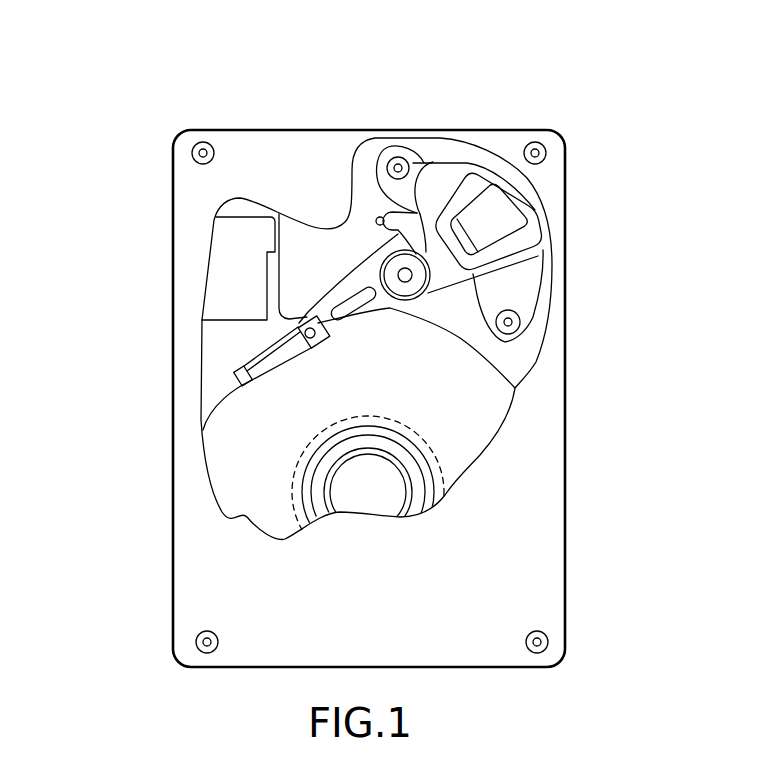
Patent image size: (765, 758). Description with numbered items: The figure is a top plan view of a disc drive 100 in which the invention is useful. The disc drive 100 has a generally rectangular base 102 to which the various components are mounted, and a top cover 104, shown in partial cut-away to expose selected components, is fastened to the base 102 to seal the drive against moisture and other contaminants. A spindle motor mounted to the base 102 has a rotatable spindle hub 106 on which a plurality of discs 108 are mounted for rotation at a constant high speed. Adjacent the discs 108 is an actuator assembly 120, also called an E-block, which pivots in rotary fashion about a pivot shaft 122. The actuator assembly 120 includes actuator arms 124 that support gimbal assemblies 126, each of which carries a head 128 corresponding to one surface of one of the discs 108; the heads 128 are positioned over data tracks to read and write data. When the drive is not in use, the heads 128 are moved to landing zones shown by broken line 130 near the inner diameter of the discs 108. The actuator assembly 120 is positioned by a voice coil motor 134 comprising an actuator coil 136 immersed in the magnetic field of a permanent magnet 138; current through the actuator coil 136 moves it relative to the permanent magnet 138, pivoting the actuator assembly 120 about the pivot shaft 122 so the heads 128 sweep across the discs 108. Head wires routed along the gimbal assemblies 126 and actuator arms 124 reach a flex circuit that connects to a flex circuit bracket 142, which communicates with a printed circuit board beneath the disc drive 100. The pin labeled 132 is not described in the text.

The disc drive 100 is at (200, 100).
The base 102 is at (215, 356).
The top cover 104 is at (207, 562).
The spindle hub 106 is at (368, 498).
The discs 108 is at (480, 437).
The actuator assembly 120 is at (393, 299).
The pivot shaft 122 is at (405, 277).
The actuator arms 124 is at (333, 327).
The gimbal assemblies 126 is at (273, 357).
The head 128 is at (233, 385).
The landing zones 130 is at (292, 488).
The latch pin 132 is at (377, 219).
The voice coil motor 134 is at (447, 181).
The actuator coil 136 is at (530, 218).
The permanent magnet 138 is at (427, 188).
The flex circuit bracket 142 is at (232, 277).